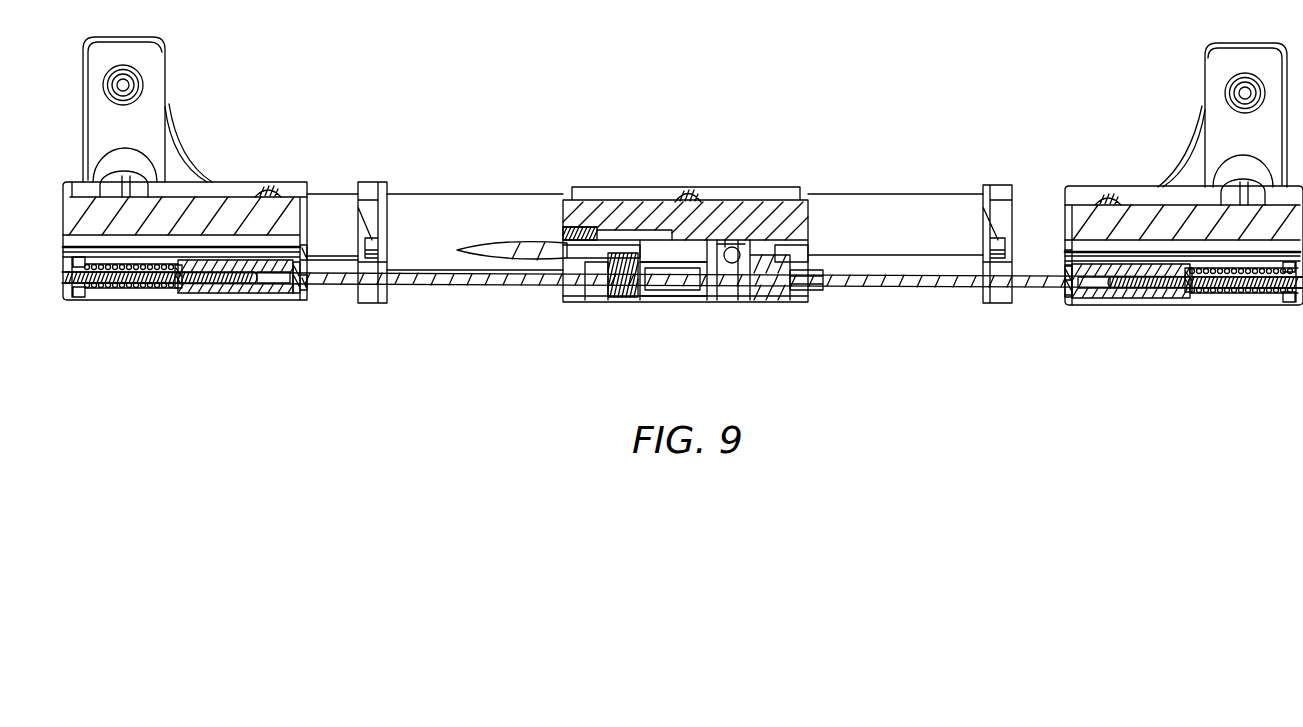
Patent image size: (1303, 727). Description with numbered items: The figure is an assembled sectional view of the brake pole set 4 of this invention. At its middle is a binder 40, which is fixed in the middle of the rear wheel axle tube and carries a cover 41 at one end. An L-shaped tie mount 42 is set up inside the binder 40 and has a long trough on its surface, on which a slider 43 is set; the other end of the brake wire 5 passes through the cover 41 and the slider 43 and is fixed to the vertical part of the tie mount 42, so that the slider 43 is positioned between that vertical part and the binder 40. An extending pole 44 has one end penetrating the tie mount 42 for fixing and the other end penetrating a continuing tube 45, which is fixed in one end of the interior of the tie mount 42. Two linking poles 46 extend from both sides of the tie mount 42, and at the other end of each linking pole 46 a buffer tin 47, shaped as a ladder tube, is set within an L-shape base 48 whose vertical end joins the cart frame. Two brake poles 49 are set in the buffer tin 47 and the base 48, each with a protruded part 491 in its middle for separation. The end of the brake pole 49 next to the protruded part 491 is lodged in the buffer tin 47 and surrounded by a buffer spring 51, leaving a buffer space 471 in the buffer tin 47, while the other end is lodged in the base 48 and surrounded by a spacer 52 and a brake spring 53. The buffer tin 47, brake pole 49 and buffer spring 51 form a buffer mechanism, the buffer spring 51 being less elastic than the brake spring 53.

The brake pole set 4 is at (817, 178).
The brake wire 5 is at (505, 248).
The binder 40 is at (743, 218).
The cover 41 is at (578, 232).
The tie mount 42 is at (733, 290).
The slider 43 is at (618, 300).
The extending pole 44 is at (672, 300).
The continuing tube 45 is at (810, 292).
The linking pole 46 is at (468, 286).
The buffer tin 47 is at (298, 297).
The buffer space 471 is at (268, 293).
The L-shape base 48 is at (220, 188).
The brake pole 49 is at (142, 290).
The protruded part 491 is at (185, 293).
The buffer spring 51 is at (223, 293).
The spacer 52 is at (176, 290).
The brake spring 53 is at (108, 290).